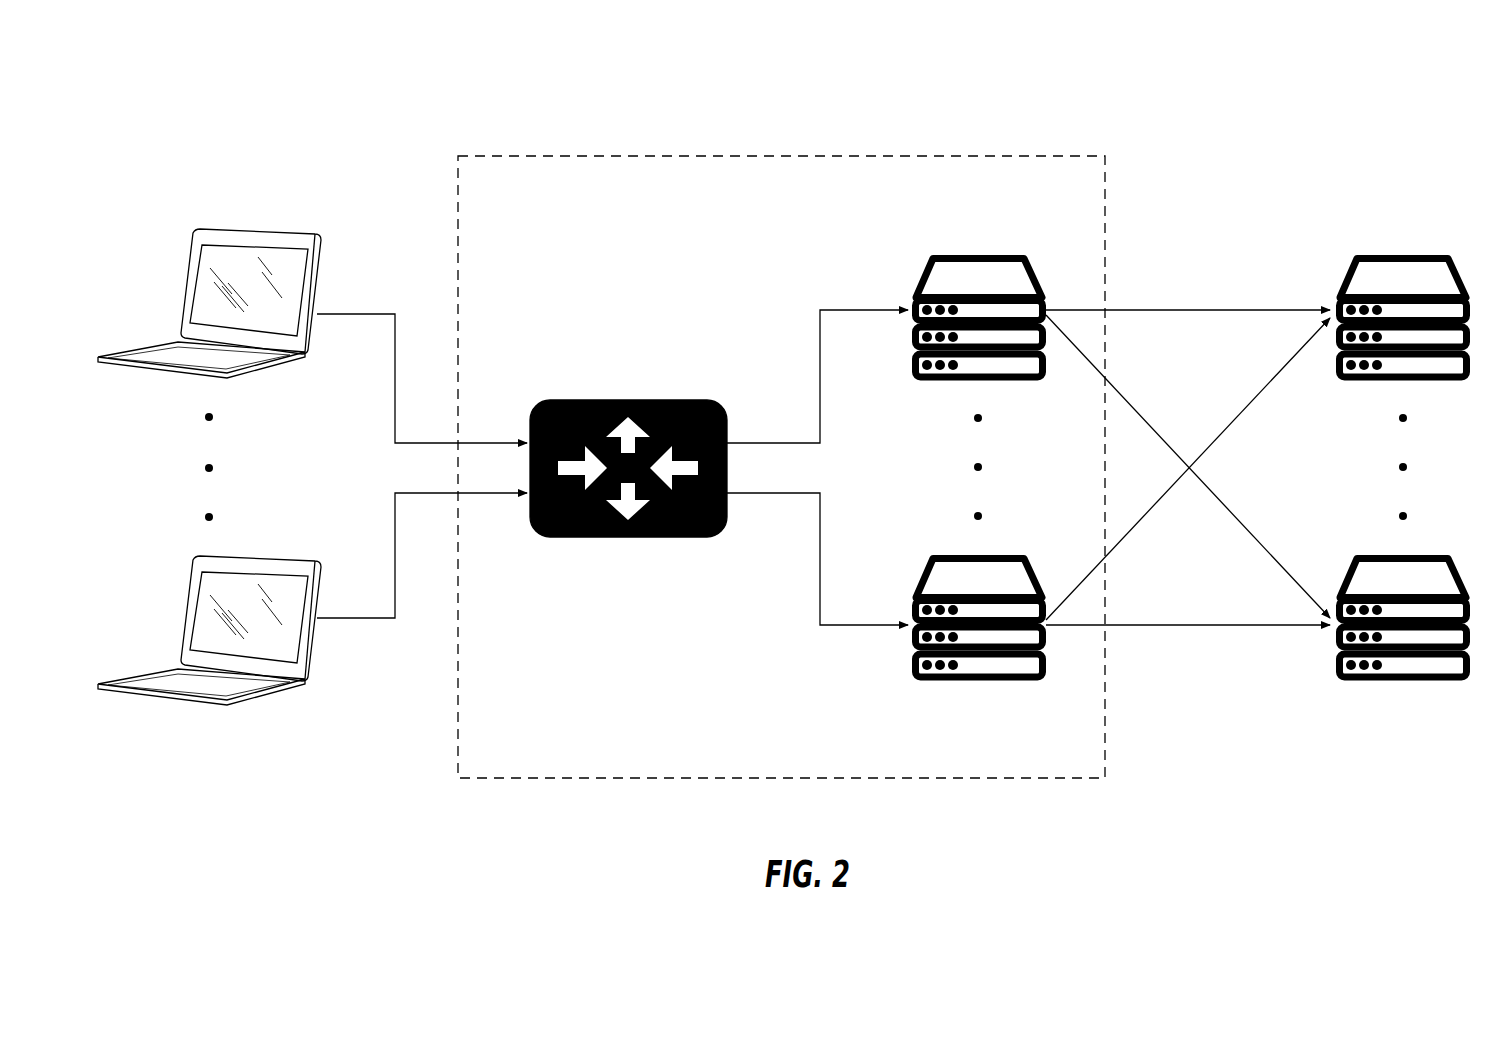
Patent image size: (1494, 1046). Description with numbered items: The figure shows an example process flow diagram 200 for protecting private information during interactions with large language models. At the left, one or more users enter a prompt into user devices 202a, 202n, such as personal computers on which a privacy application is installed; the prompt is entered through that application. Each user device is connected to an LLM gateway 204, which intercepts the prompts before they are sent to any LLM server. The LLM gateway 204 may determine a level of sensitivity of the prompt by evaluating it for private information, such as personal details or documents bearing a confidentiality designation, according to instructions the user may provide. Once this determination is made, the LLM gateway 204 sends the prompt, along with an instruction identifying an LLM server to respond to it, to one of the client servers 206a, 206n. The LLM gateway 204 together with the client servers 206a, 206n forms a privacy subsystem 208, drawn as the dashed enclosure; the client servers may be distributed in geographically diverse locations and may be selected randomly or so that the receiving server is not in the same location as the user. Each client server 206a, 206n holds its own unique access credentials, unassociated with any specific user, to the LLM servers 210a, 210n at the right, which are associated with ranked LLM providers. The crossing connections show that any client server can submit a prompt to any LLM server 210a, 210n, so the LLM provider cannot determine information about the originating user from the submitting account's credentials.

The process flow diagram 200 is at (308, 80).
The user device 202a is at (298, 233).
The user device 202n is at (298, 560).
The LLM gateway 204 is at (628, 400).
The client server 206a is at (982, 255).
The client server 206n is at (982, 683).
The privacy subsystem 208 is at (782, 156).
The LLM server 210a is at (1407, 255).
The LLM server 210n is at (1407, 683).